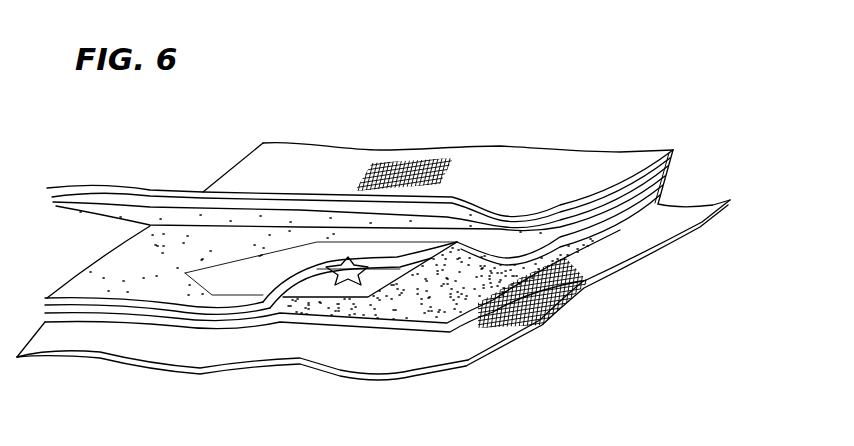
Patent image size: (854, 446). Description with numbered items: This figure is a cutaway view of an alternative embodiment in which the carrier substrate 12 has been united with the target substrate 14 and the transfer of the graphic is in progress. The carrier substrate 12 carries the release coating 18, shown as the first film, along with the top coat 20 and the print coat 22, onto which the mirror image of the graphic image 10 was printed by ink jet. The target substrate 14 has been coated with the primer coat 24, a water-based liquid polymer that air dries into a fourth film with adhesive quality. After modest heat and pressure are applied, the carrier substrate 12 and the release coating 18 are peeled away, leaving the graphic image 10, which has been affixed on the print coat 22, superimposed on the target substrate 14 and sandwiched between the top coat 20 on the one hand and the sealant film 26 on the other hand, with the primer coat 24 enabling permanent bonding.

The graphic image 10 is at (341, 315).
The carrier substrate 12 is at (503, 157).
The target substrate 14 is at (643, 235).
The release coating 18 is at (662, 162).
The top coat 20 is at (661, 173).
The print coat 22 is at (660, 182).
The sealant film 26 is at (660, 192).
The primer coat 24 is at (660, 200).